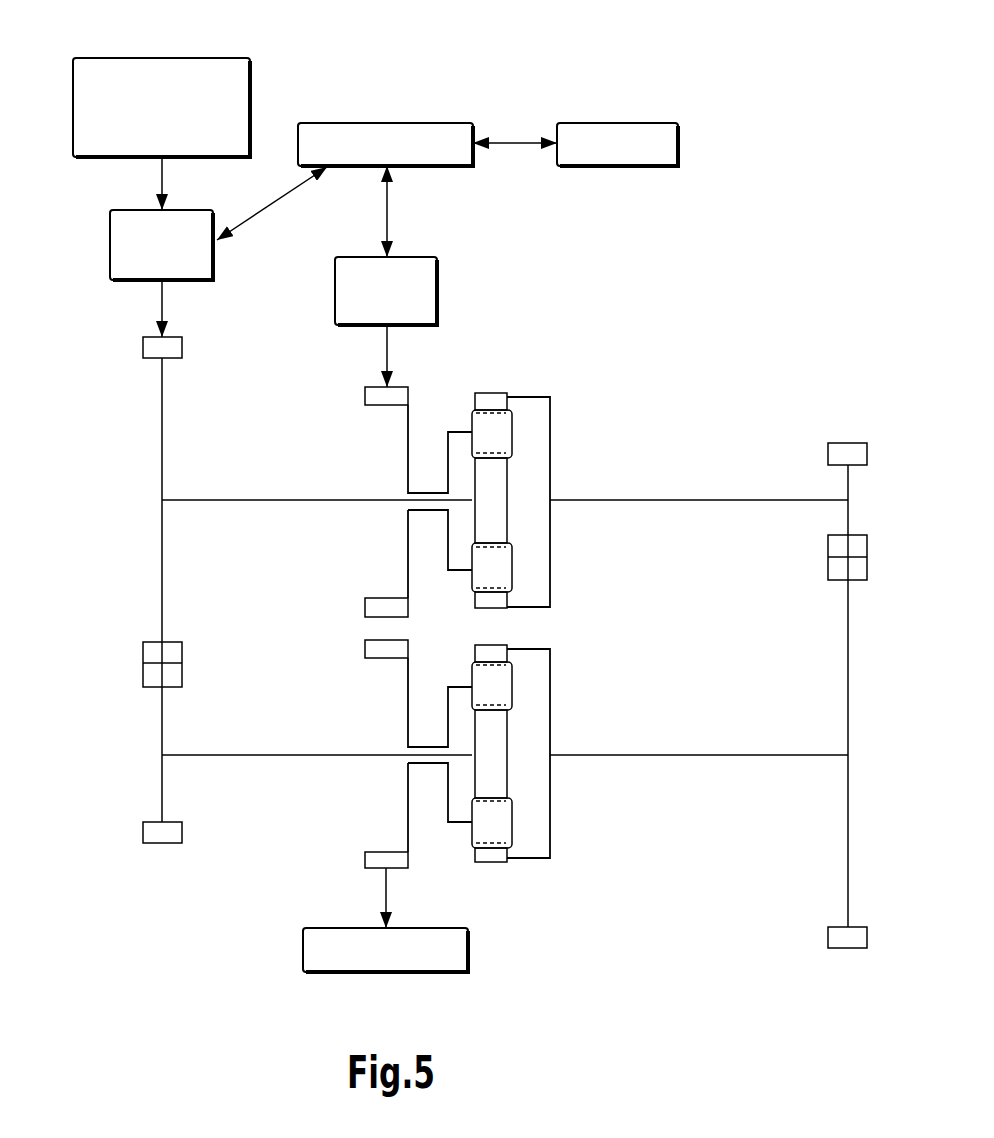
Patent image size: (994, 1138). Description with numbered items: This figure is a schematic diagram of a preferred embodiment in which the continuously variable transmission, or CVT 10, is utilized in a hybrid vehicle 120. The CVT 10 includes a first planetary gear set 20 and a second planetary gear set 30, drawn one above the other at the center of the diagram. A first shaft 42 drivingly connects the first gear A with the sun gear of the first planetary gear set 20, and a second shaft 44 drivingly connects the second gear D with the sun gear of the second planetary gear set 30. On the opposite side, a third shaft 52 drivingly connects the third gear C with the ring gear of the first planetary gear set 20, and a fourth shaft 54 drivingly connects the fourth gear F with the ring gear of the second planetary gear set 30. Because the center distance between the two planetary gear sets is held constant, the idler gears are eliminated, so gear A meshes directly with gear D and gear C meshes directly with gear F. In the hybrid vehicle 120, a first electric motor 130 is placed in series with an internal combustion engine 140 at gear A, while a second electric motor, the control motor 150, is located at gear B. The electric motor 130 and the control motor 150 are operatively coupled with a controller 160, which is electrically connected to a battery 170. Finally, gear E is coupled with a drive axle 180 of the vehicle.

The continuously variable transmission 10 is at (600, 432).
The first planetary gear set 20 is at (492, 392).
The second planetary gear set 30 is at (503, 645).
The first shaft 42 is at (227, 500).
The second shaft 44 is at (258, 755).
The third shaft 52 is at (735, 503).
The second output shaft 54 is at (697, 753).
The hybrid vehicle 120 is at (540, 60).
The first electric motor 130 is at (110, 265).
The internal combustion engine 140 is at (250, 107).
The control motor 150 is at (437, 300).
The controller 160 is at (430, 123).
The battery 170 is at (678, 143).
The drive axle 180 is at (470, 948).
The first gear A is at (143, 347).
The gear B is at (365, 393).
The third gear C is at (828, 453).
The second gear D is at (143, 832).
The gear E is at (365, 860).
The fourth gear F is at (828, 940).